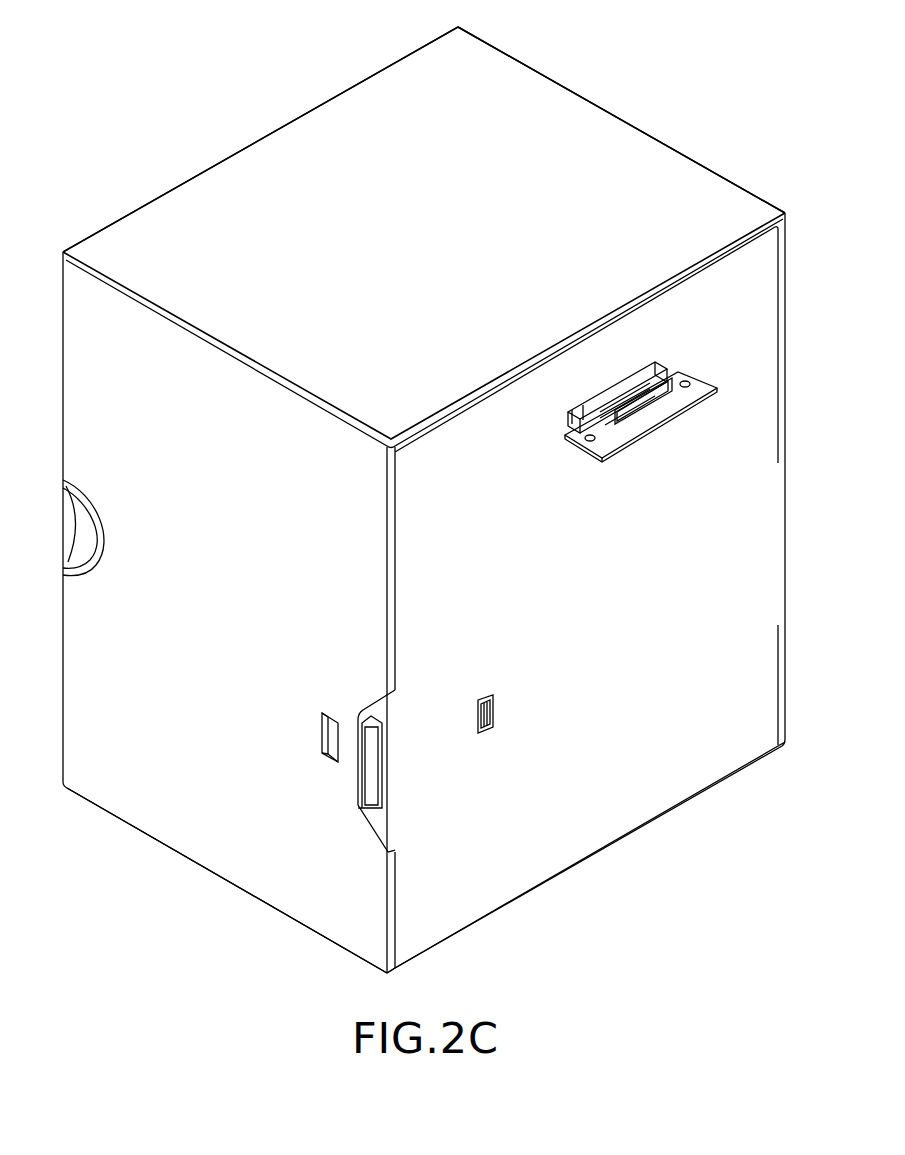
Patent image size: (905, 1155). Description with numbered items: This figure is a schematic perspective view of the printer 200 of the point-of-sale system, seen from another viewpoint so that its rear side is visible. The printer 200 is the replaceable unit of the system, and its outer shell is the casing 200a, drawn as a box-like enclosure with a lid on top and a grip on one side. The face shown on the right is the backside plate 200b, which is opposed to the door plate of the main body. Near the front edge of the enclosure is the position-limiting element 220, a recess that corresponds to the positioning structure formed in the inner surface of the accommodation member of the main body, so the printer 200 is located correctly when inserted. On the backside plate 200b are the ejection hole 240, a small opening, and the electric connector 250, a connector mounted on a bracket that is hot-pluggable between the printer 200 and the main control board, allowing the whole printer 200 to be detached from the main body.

The printer 200 is at (289, 145).
The casing 200a is at (616, 140).
The backside plate 200b is at (660, 795).
The position-limiting element 220 is at (372, 780).
The ejection hole 240 is at (495, 720).
The electric connector 250 is at (677, 374).